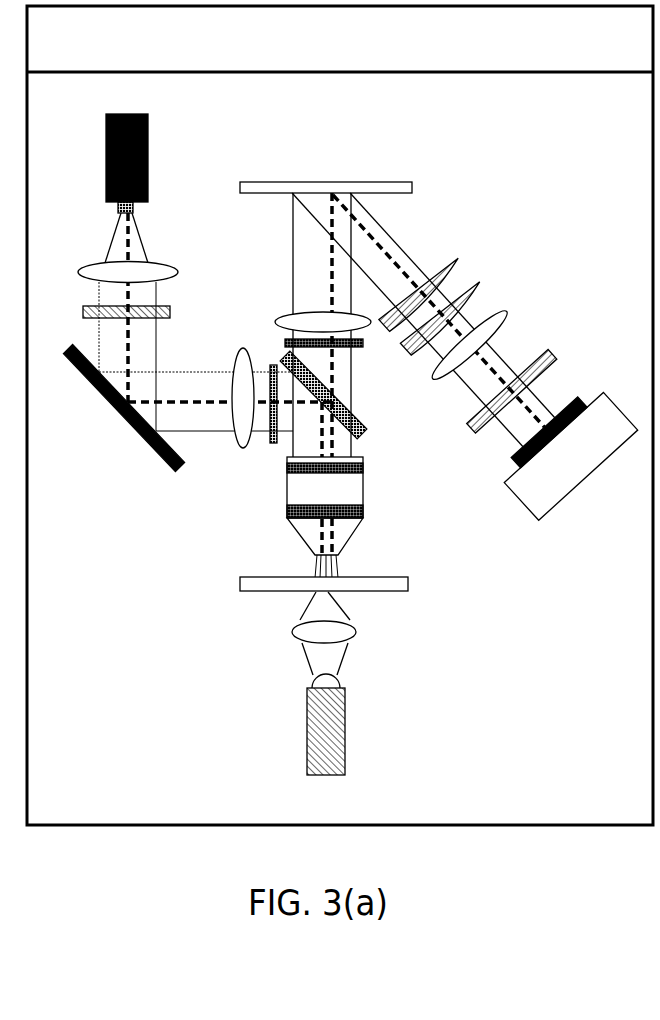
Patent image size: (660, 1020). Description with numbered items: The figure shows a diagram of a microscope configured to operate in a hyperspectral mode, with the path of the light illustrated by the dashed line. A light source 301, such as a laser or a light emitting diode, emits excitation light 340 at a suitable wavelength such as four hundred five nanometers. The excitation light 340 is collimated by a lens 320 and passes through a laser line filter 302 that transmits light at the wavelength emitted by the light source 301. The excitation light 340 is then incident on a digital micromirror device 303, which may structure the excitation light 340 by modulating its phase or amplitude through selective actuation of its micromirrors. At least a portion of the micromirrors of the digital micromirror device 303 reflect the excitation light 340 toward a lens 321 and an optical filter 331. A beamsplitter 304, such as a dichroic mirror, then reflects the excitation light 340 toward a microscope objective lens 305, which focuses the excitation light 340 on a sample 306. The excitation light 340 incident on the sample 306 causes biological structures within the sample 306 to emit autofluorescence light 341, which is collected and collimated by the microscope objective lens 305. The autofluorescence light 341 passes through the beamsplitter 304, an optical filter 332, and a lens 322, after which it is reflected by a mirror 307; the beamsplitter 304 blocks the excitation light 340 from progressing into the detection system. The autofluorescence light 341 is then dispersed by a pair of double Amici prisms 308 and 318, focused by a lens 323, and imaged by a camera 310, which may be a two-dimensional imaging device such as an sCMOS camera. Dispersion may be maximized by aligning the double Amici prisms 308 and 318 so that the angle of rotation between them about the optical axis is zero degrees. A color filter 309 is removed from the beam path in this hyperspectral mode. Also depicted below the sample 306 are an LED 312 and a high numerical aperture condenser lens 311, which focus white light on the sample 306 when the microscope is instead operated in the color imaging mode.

The light source 301 is at (102, 163).
The excitation light 340 is at (146, 307).
The lens 320 is at (150, 279).
The laser line filter 302 is at (146, 316).
The digital micromirror device (DMD) 303 is at (123, 407).
The lens 321 is at (221, 407).
The beamsplitter 304 is at (352, 407).
The mirror 307 is at (326, 174).
The autofluorescence light 341 is at (298, 325).
The lens 322 is at (298, 329).
The optical filter 332 is at (338, 359).
The optical filter 331 is at (304, 469).
The microscope objective lens 305 is at (304, 517).
The sample 306 is at (353, 591).
The high numerical aperture condenser lens 311 is at (348, 637).
The LED 312 is at (354, 724).
The double Amici prism 318 is at (419, 274).
The double Amici prism 308 is at (447, 300).
The lens 323 is at (488, 345).
The color filter 309 is at (533, 390).
The camera 310 is at (570, 464).